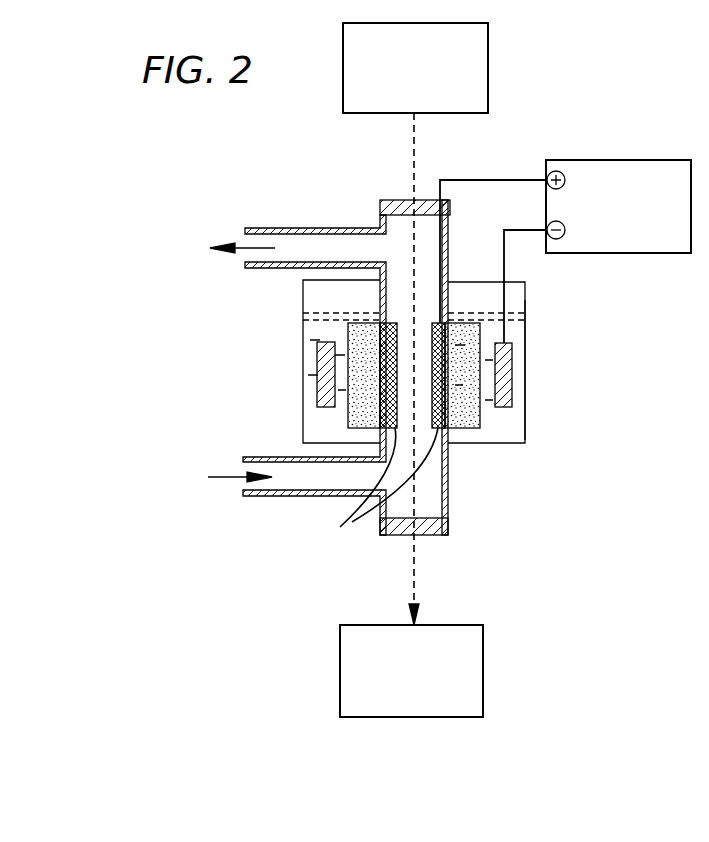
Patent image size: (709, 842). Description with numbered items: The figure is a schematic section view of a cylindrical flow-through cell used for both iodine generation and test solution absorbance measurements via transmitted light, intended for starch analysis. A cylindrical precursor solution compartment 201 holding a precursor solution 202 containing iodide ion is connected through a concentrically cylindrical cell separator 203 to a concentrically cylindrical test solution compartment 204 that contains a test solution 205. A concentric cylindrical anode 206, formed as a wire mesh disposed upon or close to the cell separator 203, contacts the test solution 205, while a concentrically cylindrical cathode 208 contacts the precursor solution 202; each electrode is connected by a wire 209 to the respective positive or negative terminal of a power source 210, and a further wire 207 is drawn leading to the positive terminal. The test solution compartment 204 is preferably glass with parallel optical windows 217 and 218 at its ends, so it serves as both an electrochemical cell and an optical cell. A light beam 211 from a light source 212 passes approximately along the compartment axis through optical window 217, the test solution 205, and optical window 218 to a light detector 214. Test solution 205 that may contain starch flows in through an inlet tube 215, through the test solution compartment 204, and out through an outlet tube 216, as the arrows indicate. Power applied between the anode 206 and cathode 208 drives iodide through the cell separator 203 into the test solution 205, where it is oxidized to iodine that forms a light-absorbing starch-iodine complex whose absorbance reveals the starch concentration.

The precursor solution compartment 201 is at (525, 298).
The precursor solution 202 is at (520, 353).
The cell separator 203 is at (350, 333).
The test solution compartment 204 is at (442, 486).
The test solution 205 is at (430, 498).
The anode 206 is at (369, 482).
The wire to positive terminal 207 is at (455, 180).
The cathode 208 is at (317, 373).
The wire 209 is at (500, 268).
The power source 210 is at (585, 160).
The light beam 211 is at (413, 563).
The light source 212 is at (488, 70).
The light detector 214 is at (378, 717).
The inlet tube 215 is at (276, 457).
The outlet tube 216 is at (278, 228).
The optical window 217 is at (395, 200).
The optical window 218 is at (392, 535).